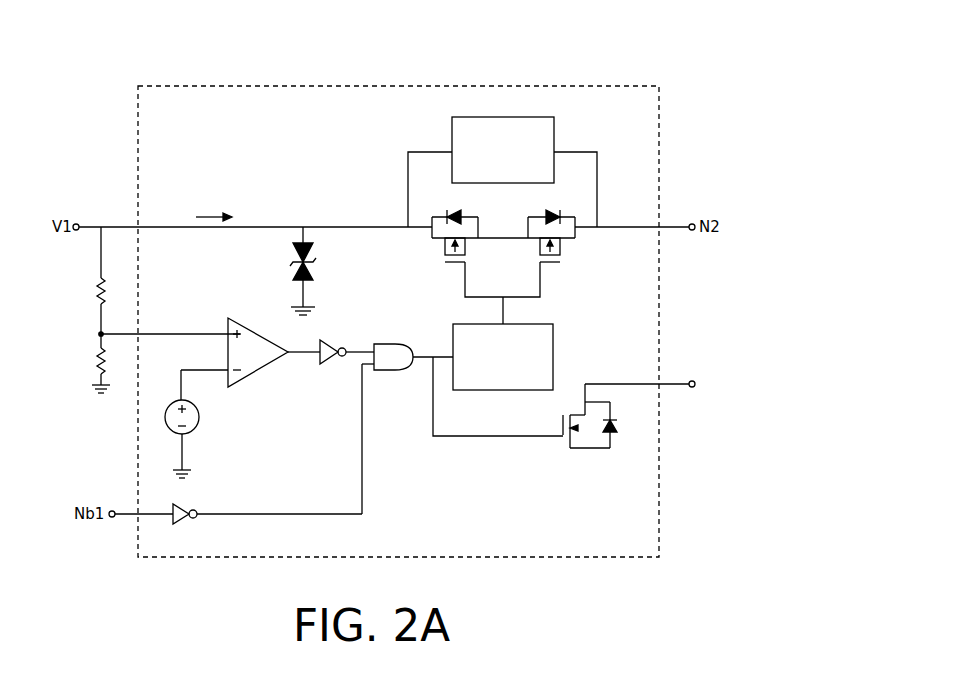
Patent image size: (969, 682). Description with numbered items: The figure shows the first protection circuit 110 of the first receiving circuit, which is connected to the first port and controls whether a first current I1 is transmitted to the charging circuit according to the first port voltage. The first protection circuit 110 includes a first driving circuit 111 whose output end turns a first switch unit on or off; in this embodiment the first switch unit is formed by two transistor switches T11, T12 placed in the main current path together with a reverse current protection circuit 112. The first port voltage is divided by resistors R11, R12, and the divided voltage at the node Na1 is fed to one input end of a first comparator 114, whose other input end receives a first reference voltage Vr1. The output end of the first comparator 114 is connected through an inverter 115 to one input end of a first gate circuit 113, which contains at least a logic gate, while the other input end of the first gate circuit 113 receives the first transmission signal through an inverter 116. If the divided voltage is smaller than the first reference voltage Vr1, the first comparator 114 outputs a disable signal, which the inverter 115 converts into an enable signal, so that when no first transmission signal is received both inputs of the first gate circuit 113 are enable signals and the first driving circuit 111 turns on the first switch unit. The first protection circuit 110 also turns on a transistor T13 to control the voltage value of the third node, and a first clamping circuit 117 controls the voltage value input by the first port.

The first protection circuit 110 is at (646, 25).
The first driving circuit 111 is at (516, 365).
The reverse current protection circuit 112 is at (516, 158).
The first gate circuit 113 is at (392, 372).
The first comparator 114 is at (262, 372).
The inverter 115 is at (330, 366).
The inverter 116 is at (182, 505).
The first clamping circuit 117 is at (316, 262).
The transistor switch T11 is at (443, 237).
The transistor switch T12 is at (562, 237).
The transistor T13 is at (635, 418).
The resistor R11 is at (83, 291).
The resistor R12 is at (83, 361).
The node Na1 is at (153, 334).
The first reference voltage Vr1 is at (199, 424).
The first current I1 is at (216, 211).